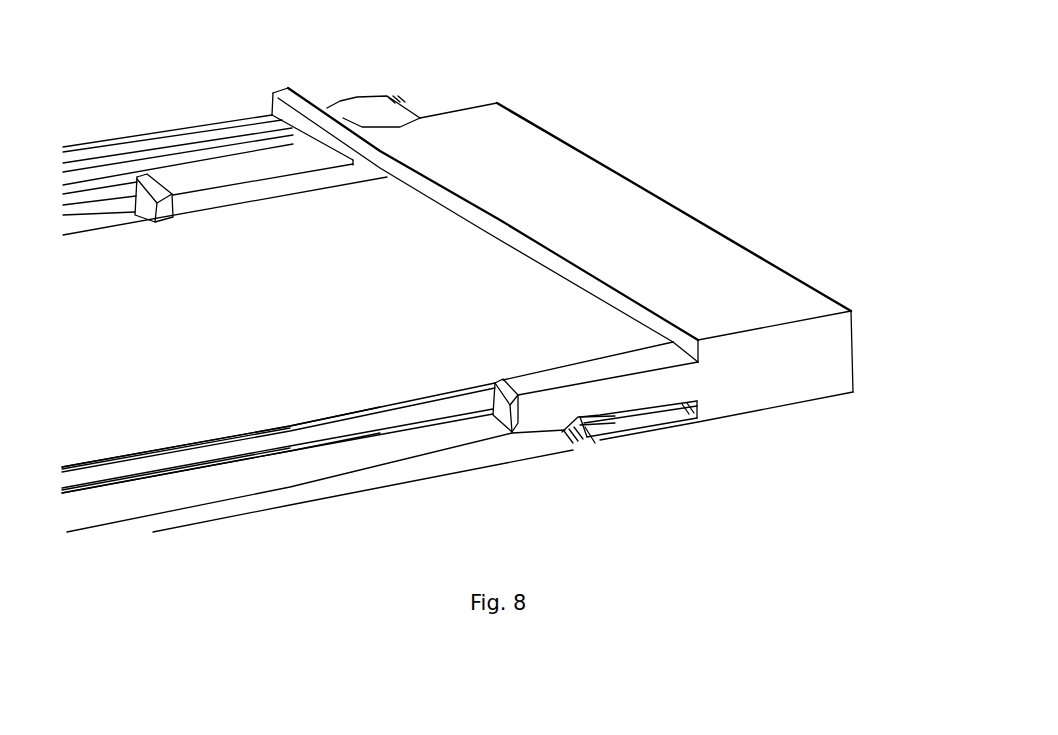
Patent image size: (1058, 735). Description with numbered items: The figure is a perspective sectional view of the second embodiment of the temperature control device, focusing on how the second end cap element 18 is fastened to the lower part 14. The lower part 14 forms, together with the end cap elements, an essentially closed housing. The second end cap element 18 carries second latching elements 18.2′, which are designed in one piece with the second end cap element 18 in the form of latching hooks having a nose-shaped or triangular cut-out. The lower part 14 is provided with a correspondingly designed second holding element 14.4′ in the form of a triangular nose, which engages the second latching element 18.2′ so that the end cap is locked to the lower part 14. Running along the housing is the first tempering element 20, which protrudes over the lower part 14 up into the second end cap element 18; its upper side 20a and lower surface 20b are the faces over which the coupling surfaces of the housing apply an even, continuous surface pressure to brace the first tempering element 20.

The lower part 14 is at (440, 527).
The second holding element 14.4′ is at (588, 505).
The second end cap element 18 is at (657, 135).
The second latching element 18.2′ is at (210, 177).
The first tempering element 20 is at (343, 563).
The upper side 20a is at (145, 587).
The lower surface 20b is at (240, 560).